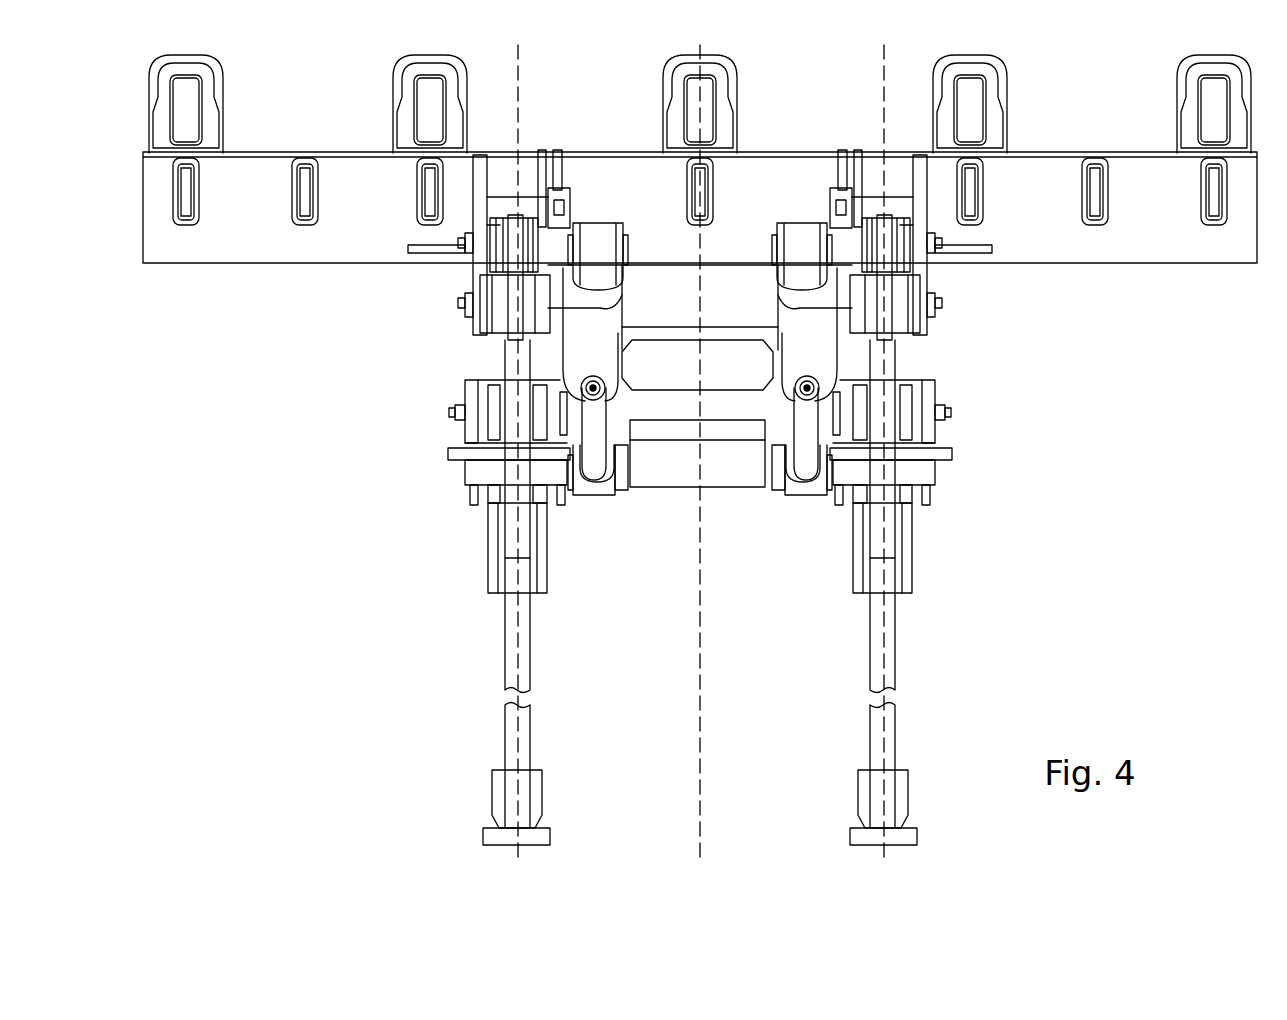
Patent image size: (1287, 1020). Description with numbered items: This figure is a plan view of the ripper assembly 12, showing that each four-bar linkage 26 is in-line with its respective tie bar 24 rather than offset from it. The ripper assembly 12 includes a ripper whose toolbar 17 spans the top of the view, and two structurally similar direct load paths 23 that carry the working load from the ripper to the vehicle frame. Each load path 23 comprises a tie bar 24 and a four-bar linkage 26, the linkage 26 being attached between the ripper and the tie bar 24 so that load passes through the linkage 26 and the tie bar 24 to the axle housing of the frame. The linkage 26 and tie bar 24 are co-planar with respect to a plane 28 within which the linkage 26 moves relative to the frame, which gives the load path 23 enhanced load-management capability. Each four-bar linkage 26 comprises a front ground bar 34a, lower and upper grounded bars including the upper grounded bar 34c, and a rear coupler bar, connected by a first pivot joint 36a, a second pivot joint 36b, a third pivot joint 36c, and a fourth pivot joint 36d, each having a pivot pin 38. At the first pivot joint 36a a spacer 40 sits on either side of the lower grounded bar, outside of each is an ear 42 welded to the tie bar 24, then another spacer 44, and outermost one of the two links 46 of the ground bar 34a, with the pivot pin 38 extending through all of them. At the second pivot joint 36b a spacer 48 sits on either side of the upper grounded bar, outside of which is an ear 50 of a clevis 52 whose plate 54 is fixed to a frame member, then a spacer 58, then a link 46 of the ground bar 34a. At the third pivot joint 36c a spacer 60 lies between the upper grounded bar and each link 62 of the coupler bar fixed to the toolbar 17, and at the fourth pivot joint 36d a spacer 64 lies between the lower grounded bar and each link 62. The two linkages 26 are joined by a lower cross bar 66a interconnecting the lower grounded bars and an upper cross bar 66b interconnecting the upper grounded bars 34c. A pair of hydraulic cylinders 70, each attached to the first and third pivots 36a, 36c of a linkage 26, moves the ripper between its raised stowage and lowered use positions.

The ripper assembly 12 is at (1108, 650).
The toolbar 17 is at (192, 256).
The direct load path 23 is at (300, 400).
The tie bar 24 is at (505, 643).
The four-bar linkage 26 is at (450, 385).
The plane 28 is at (505, 680).
The front ground bar 34a is at (697, 453).
The upper grounded bar 34c is at (445, 380).
The first pivot joint 36a is at (800, 505).
The second pivot joint 36b is at (607, 330).
The third pivot joint 36c is at (437, 243).
The fourth pivot joint 36d is at (452, 290).
The pivot pin 38 is at (455, 410).
The spacer 40 is at (546, 528).
The ear 42 is at (548, 590).
The spacer 44 is at (545, 505).
The link 46 is at (560, 500).
The spacer 48 is at (584, 376).
The ear 50 is at (470, 472).
The clevis 52 is at (386, 450).
The plate 54 is at (455, 452).
The spacer 58 is at (460, 428).
The spacer 60 is at (558, 215).
The link 62 is at (541, 165).
The spacer 64 is at (540, 300).
The lower cross bar 66a is at (765, 272).
The upper cross bar 66b is at (753, 379).
The hydraulic cylinder 70 is at (620, 292).